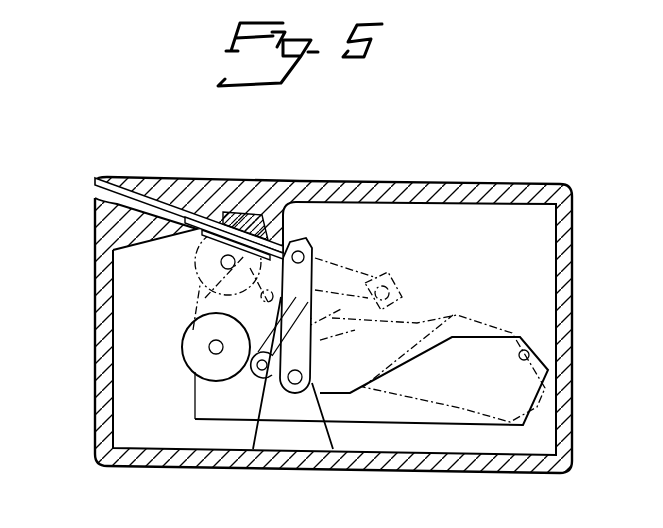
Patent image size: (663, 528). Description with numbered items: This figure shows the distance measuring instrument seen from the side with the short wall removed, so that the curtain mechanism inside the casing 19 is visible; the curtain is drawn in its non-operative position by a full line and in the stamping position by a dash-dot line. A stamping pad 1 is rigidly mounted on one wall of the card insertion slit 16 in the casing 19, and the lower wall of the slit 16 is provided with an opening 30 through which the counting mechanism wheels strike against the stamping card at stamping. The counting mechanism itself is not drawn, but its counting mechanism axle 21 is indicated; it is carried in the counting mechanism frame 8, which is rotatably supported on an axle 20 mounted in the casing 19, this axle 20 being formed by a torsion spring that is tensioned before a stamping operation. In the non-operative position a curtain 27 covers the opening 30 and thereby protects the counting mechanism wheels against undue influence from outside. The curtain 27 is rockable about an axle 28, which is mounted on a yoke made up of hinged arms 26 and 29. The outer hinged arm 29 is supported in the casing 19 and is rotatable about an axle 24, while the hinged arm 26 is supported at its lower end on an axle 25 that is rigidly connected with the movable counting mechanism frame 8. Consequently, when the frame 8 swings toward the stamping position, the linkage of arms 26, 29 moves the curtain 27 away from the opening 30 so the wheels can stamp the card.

The stamping pad 1 is at (243, 213).
The counting mechanism frame 8 is at (392, 420).
The card insertion slit 16 is at (105, 192).
The casing 19 is at (100, 306).
The axle 20 is at (529, 355).
The counting mechanism axle 21 is at (209, 347).
The axle 24 is at (293, 385).
The axle 25 is at (261, 371).
The hinged arm 26 is at (268, 358).
The curtain 27 is at (196, 217).
The axle 28 is at (303, 250).
The hinged arm 29 is at (313, 357).
The opening 30 is at (200, 232).